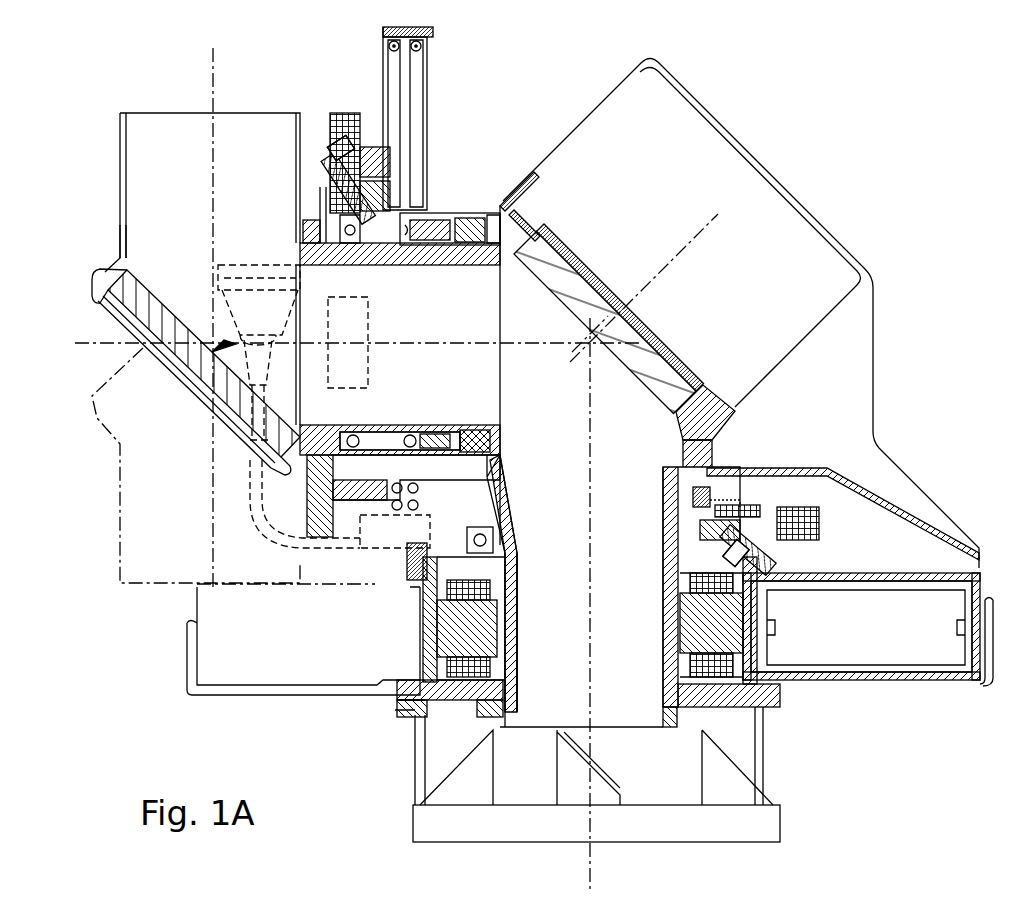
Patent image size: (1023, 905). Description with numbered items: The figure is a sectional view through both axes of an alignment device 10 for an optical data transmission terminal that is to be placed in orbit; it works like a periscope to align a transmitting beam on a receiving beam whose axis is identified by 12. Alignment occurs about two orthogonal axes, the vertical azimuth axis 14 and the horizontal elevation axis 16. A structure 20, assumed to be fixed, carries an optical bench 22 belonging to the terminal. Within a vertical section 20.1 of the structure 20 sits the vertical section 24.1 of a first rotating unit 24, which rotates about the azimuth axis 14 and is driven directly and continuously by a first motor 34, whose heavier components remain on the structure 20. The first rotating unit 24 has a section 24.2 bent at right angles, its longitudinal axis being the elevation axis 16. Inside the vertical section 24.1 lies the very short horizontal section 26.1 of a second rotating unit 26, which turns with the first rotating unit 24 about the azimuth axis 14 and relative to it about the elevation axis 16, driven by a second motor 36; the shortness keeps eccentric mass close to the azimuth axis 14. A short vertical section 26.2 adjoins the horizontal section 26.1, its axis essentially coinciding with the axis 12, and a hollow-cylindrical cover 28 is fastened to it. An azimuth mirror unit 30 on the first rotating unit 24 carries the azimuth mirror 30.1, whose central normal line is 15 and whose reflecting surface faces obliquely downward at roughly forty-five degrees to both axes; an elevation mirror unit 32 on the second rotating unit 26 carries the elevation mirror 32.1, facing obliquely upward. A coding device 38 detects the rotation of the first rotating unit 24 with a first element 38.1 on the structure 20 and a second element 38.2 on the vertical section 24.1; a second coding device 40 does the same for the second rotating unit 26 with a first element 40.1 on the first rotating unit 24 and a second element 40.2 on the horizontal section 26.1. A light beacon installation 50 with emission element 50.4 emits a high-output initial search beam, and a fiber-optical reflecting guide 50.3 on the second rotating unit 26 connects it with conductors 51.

The alignment device 10 is at (992, 250).
The axis of the receiving beam 12 is at (210, 55).
The azimuth axis 14 is at (592, 862).
The central normal line of the azimuth mirror 15 is at (625, 300).
The elevation axis 16 is at (95, 343).
The structure 20 is at (770, 700).
The vertical section of the structure 20.1 is at (738, 720).
The optical bench 22 is at (465, 800).
The first rotating unit 24 is at (518, 665).
The vertical section of the first rotating unit 24.1 is at (510, 655).
The bent section of the first rotating unit 24.2 is at (395, 425).
The second rotating unit 26 is at (372, 422).
The horizontal section of the second rotating unit 26.1 is at (398, 266).
The short vertical section of the second rotating unit 26.2 is at (119, 238).
The hollow-cylindrical cover 28 is at (122, 165).
The azimuth mirror unit 30 is at (790, 195).
The azimuth mirror 30.1 is at (645, 395).
The elevation mirror unit 32 is at (98, 288).
The elevation mirror 32.1 is at (110, 306).
The first motor 34 is at (400, 668).
The second motor 36 is at (455, 232).
The coding device 38 is at (770, 492).
The first element of the coding device 38.1 is at (835, 500).
The second element of the coding device 38.2 is at (738, 490).
The second coding device 40 is at (333, 110).
The first element of the second coding device 40.1 is at (340, 122).
The second element of the second coding device 40.2 is at (322, 190).
The light beacon installation 50 is at (185, 380).
The fiber-optical reflecting guide 50.3 is at (642, 58).
The emission element 50.4 is at (245, 278).
The conductors 51 is at (262, 528).